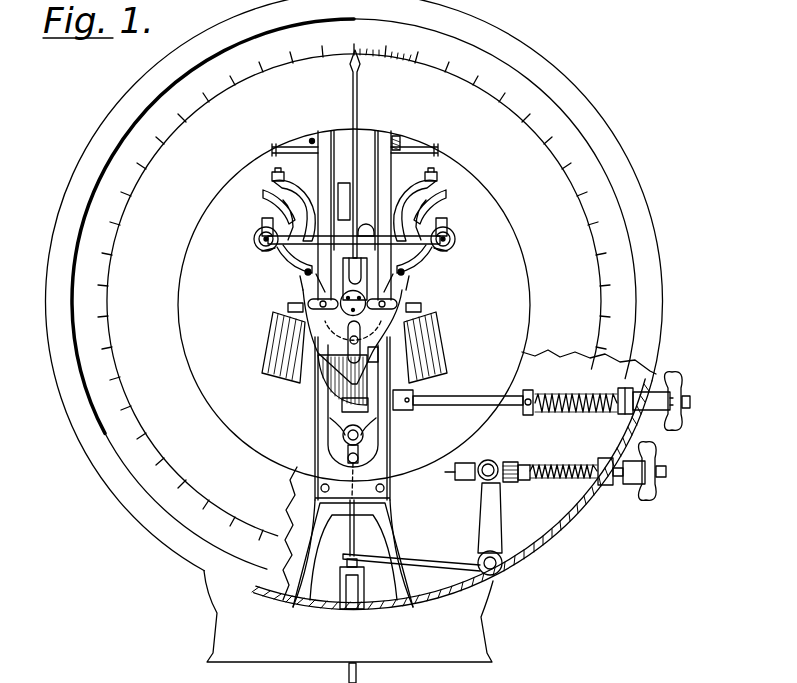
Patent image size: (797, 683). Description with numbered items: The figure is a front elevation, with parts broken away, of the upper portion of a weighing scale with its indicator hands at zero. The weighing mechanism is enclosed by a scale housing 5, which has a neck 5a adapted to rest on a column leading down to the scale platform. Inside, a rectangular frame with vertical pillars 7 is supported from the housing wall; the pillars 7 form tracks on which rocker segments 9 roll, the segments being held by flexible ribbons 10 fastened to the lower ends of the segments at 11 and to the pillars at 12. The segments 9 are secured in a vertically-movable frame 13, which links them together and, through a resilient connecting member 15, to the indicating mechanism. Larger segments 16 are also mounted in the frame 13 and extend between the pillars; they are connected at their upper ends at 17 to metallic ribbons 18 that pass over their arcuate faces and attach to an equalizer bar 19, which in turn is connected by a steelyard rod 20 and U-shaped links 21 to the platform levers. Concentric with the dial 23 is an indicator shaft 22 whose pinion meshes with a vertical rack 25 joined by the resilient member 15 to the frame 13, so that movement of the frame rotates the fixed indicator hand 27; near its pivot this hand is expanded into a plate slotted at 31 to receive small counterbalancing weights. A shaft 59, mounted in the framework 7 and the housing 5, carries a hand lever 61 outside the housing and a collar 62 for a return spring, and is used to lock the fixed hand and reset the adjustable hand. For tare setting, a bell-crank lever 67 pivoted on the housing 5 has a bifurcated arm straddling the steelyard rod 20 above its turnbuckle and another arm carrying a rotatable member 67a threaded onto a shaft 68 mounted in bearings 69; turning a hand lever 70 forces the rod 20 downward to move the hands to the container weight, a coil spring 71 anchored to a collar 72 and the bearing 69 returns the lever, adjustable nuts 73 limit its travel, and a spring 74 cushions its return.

The scale housing 5 is at (632, 203).
The neck 5a is at (470, 623).
The vertical pillars 7 is at (384, 147).
The rocker segments 9 is at (278, 207).
The flexible ribbons 10 is at (323, 176).
The ribbon lower fastening 11 is at (304, 273).
The ribbon upper fastening 12 is at (311, 139).
The vertically-movable frame 13 is at (445, 244).
The resilient connecting member 15 is at (367, 229).
The larger segments 16 is at (278, 181).
The segment upper connection 17 is at (272, 172).
The metallic ribbons 18 is at (380, 398).
The equalizer bar 19 is at (368, 425).
The steelyard rod 20 is at (350, 522).
The U-shaped links 21 is at (348, 452).
The indicator shaft 22 is at (308, 303).
The dial 23 is at (575, 183).
The rack 25 is at (342, 183).
The fixed indicator hand 27 is at (356, 104).
The slot 31 is at (348, 350).
The shaft 59 is at (455, 397).
The hand lever 61 is at (682, 392).
The collar 62 is at (528, 390).
The bell-crank lever 67 is at (439, 561).
The rotatable member 67a is at (491, 458).
The shaft 68 is at (537, 481).
The bearings 69 is at (605, 457).
The hand lever 70 is at (654, 497).
The coil spring 71 is at (581, 468).
The collar 72 is at (524, 466).
The adjustable nuts 73 is at (468, 464).
The spring 74 is at (512, 462).